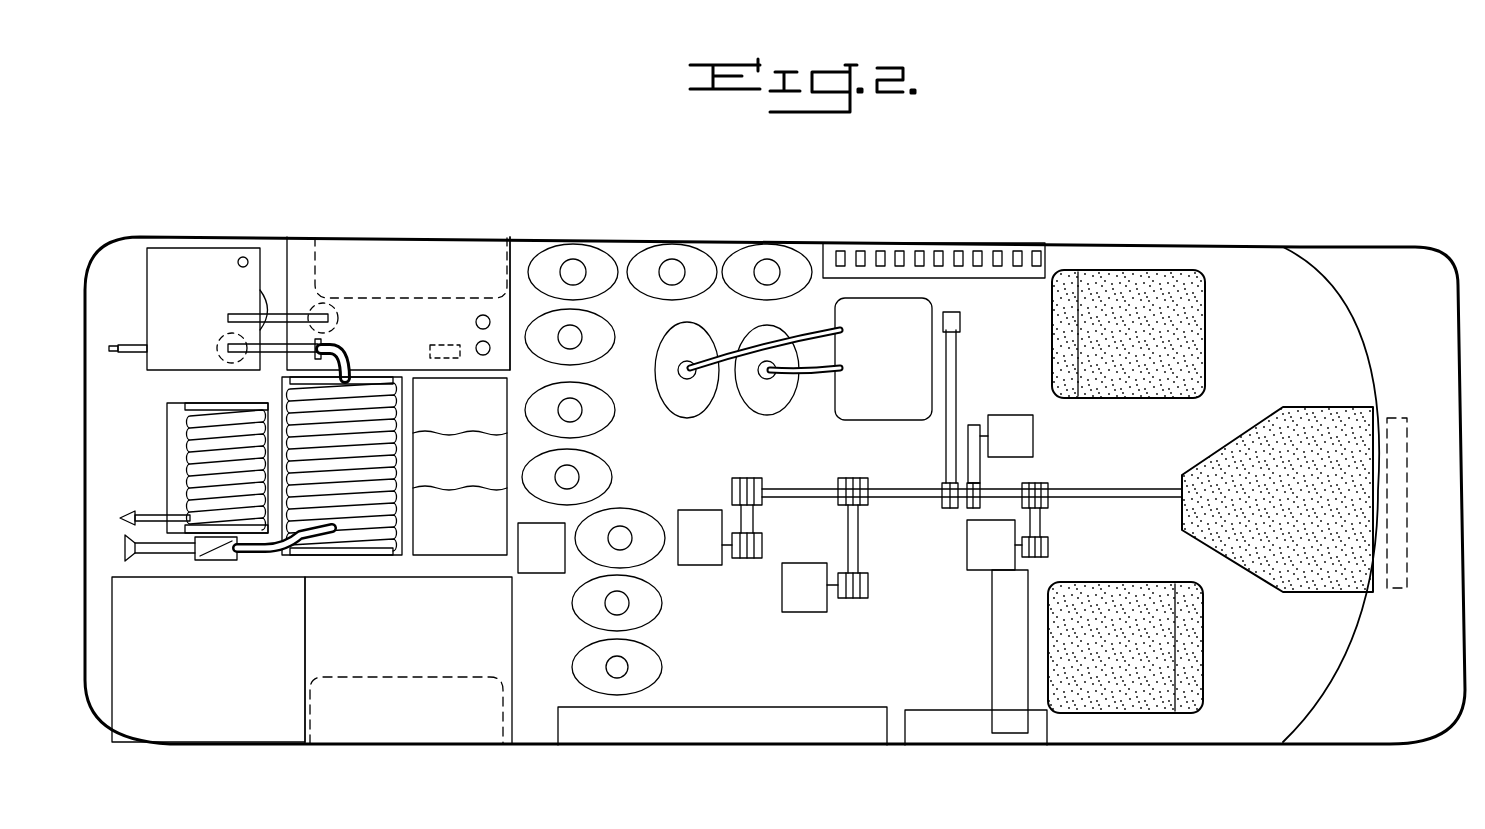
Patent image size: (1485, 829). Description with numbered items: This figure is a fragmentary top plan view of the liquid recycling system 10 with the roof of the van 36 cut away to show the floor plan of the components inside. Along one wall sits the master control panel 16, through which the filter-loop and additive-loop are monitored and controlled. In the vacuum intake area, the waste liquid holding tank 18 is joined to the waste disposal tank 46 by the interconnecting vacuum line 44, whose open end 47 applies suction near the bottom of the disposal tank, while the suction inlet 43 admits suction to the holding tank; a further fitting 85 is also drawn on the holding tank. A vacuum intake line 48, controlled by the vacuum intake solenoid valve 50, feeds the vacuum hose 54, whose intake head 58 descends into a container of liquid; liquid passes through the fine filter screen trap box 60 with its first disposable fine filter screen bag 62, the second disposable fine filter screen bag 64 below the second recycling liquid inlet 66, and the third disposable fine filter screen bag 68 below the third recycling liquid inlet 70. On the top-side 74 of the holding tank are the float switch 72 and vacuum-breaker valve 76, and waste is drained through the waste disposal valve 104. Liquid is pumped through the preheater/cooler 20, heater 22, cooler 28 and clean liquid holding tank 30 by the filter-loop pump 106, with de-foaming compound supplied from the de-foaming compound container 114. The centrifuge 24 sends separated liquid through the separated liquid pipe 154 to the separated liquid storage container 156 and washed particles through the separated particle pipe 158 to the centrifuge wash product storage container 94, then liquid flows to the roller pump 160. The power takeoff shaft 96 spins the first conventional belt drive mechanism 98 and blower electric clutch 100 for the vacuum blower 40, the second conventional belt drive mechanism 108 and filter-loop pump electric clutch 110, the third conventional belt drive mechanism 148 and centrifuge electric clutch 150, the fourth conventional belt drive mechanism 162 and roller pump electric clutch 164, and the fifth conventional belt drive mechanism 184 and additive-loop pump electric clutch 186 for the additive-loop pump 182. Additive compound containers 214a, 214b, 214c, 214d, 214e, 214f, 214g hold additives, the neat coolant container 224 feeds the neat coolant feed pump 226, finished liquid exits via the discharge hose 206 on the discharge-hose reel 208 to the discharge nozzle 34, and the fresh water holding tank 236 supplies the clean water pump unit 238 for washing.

The liquid recycling system 10 is at (1050, 166).
The master control panel 16 is at (1000, 651).
The waste liquid holding tank 18 is at (380, 339).
The preheater/cooler 20 is at (444, 471).
The heater 22 is at (444, 411).
The centrifuge 24 is at (872, 361).
The cooler 28 is at (444, 531).
The clean liquid holding tank 30 is at (388, 643).
The discharge nozzle 34 is at (122, 514).
The van 36 is at (1355, 262).
The vacuum blower 40 is at (979, 551).
The suction inlet 43 is at (483, 314).
The interconnecting vacuum line 44 is at (262, 300).
The waste disposal tank 46 is at (178, 281).
The open end 47 is at (228, 316).
The vacuum intake line 48 is at (318, 465).
The vacuum intake solenoid valve 50 is at (348, 358).
The vacuum hose 54 is at (398, 384).
The intake head 58 is at (132, 561).
The fine filter screen trap box 60 is at (237, 560).
The first disposable fine filter screen bag 62 is at (215, 562).
The second disposable fine filter screen bag 64 is at (222, 340).
The second recycling liquid inlet 66 is at (222, 348).
The third disposable fine filter screen bag 68 is at (337, 298).
The third recycling liquid inlet 70 is at (338, 318).
The float switch 72 is at (446, 345).
The top-side 74 is at (443, 250).
The vacuum-breaker valve 76 is at (513, 370).
The port 85 is at (243, 257).
The centrifuge wash product storage container 94 is at (690, 414).
The power takeoff shaft 96 is at (1140, 489).
The first conventional belt drive mechanism 98 is at (1050, 519).
The blower electric clutch 100 is at (1045, 556).
The waste disposal valve 104 is at (118, 344).
The filter-loop pump 106 is at (686, 551).
The second conventional belt drive mechanism 108 is at (764, 520).
The filter-loop pump electric clutch 110 is at (746, 560).
The de-foaming compound container 114 is at (652, 608).
The third conventional belt drive mechanism 148 is at (944, 438).
The centrifuge electric clutch 150 is at (942, 484).
The separated liquid pipe 154 is at (815, 400).
The separated liquid storage container 156 is at (780, 403).
The separated particle pipe 158 is at (712, 342).
The roller pump 160 is at (1010, 415).
The fourth conventional belt drive mechanism 162 is at (985, 478).
The roller pump electric clutch 164 is at (985, 490).
The additive-loop pump 182 is at (805, 612).
The fifth conventional belt drive mechanism 184 is at (870, 540).
The additive-loop pump electric clutch 186 is at (870, 574).
The discharge hose 206 is at (190, 422).
The discharge-hose reel 208 is at (213, 403).
The additive compound container 214a is at (643, 530).
The additive compound container 214b is at (592, 477).
The additive compound container 214c is at (598, 418).
The additive compound container 214d is at (596, 345).
The additive compound container 214e is at (585, 244).
The additive compound container 214f is at (673, 244).
The additive compound container 214g is at (768, 244).
The neat coolant container 224 is at (652, 668).
The neat coolant feed pump 226 is at (545, 573).
The fresh water holding tank 236 is at (375, 548).
The clean water pump unit 238 is at (172, 447).